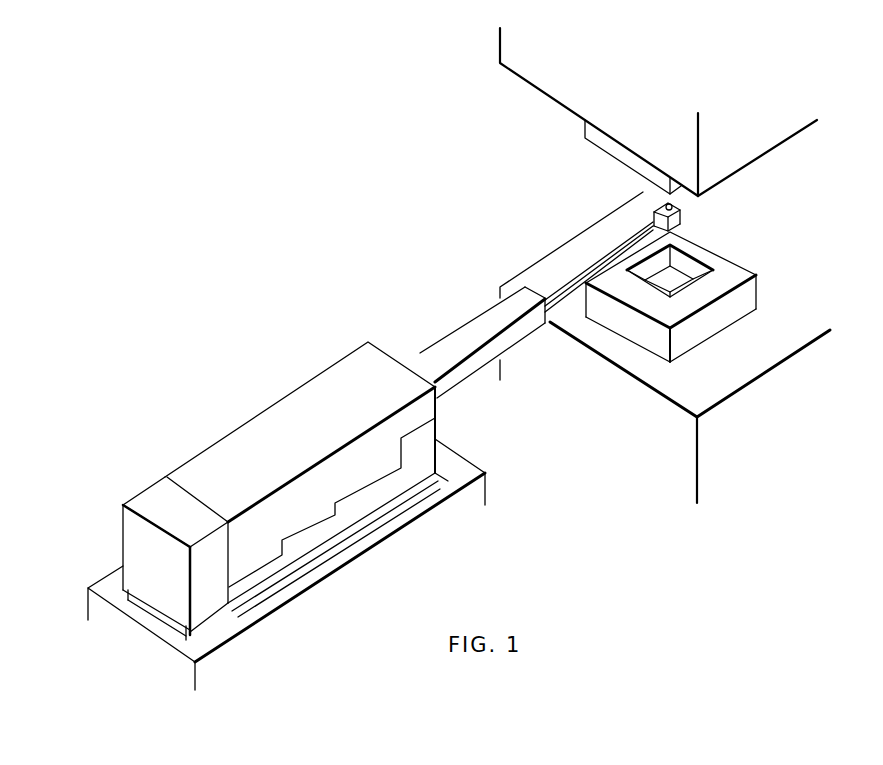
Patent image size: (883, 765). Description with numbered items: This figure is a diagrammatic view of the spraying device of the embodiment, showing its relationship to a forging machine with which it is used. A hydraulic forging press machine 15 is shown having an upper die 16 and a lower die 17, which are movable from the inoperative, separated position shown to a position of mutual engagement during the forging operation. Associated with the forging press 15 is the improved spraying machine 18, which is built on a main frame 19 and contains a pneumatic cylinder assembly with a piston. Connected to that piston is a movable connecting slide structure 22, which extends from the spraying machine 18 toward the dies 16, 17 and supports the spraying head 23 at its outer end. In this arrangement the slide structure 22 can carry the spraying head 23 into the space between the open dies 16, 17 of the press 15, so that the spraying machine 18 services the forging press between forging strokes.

The hydraulic forging press machine 15 is at (492, 47).
The die 16 is at (583, 128).
The die 17 is at (766, 286).
The spraying machine 18 is at (219, 430).
The main frame 19 is at (349, 551).
The connecting slide structure 22 is at (579, 266).
The spraying head 23 is at (682, 217).